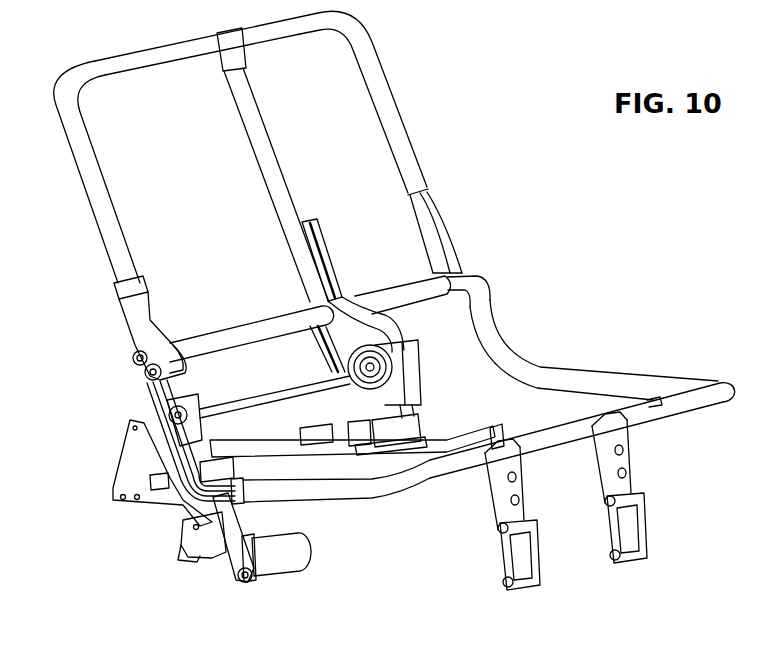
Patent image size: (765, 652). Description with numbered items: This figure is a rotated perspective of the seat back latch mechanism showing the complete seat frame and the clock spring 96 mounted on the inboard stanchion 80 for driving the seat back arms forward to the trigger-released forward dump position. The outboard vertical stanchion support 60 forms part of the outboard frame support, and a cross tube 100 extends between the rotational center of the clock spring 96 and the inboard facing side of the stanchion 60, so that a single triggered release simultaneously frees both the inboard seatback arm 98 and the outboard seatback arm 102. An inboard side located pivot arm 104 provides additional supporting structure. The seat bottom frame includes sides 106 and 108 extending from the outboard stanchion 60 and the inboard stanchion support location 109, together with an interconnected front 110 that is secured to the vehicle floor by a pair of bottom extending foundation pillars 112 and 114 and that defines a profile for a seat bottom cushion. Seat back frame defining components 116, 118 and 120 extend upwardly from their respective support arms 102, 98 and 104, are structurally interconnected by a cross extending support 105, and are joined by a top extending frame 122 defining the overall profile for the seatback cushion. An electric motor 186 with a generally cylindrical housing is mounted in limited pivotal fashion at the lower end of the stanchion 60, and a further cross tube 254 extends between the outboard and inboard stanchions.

The vertical stanchion support 60 is at (130, 442).
The inboard stanchion 80 is at (403, 403).
The clock spring 96 is at (373, 357).
The inboard seatback arm 98 is at (348, 297).
The cross tube 100 is at (243, 397).
The outboard seatback arm 102 is at (137, 322).
The inboard side located pivot arm 104 is at (443, 215).
The cross extending support 105 is at (232, 332).
The seat bottom frame side 106 is at (287, 495).
The seat bottom frame side 108 is at (653, 423).
The inboard stanchion support location 109 is at (473, 277).
The front of seat bottom frame 110 is at (585, 377).
The foundation pillar 112 is at (492, 495).
The foundation pillar 114 is at (598, 467).
The seat back frame component 116 is at (90, 200).
The seat back frame component 118 is at (258, 160).
The seat back frame component 120 is at (383, 125).
The top extending interconnecting frame 122 is at (132, 66).
The electric motor 186 is at (290, 560).
The cross tube 254 is at (280, 448).